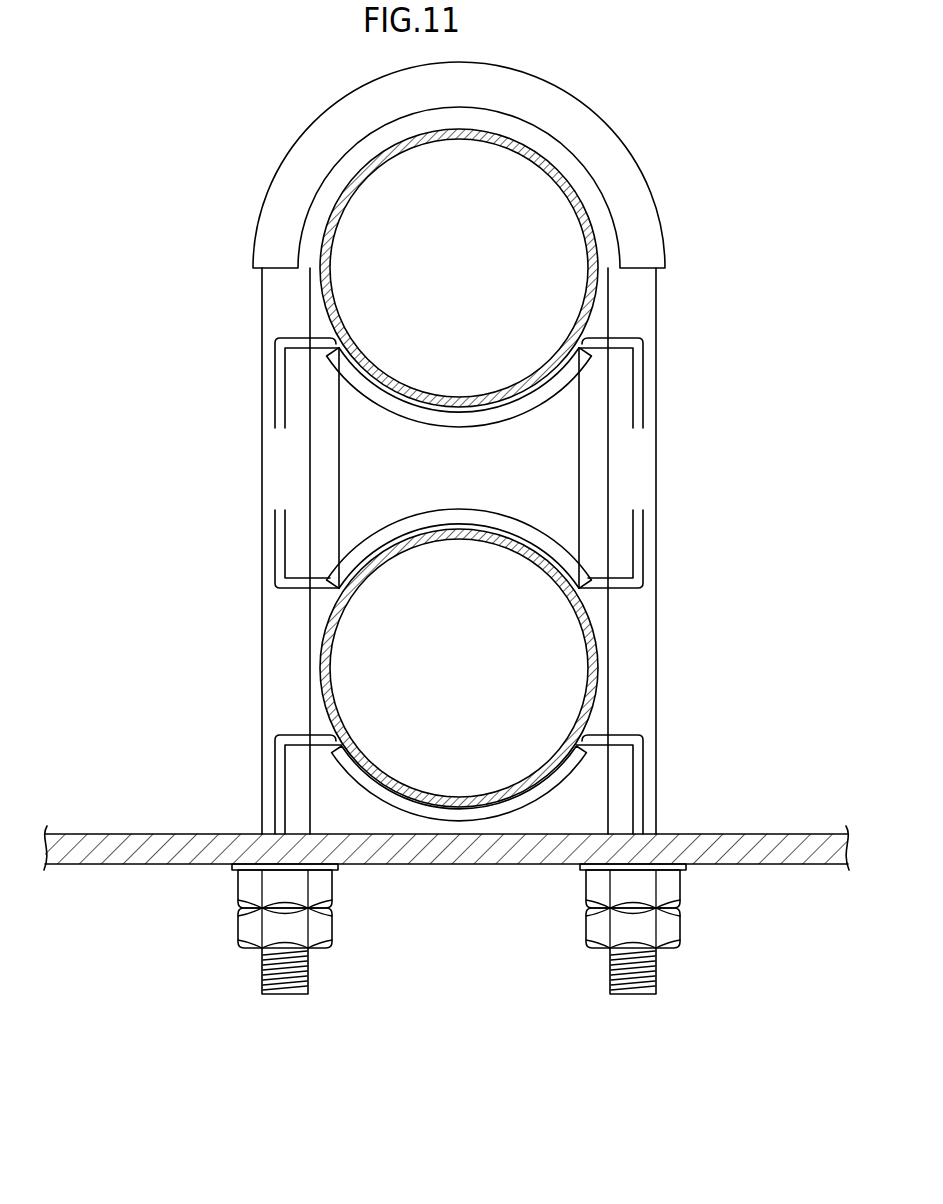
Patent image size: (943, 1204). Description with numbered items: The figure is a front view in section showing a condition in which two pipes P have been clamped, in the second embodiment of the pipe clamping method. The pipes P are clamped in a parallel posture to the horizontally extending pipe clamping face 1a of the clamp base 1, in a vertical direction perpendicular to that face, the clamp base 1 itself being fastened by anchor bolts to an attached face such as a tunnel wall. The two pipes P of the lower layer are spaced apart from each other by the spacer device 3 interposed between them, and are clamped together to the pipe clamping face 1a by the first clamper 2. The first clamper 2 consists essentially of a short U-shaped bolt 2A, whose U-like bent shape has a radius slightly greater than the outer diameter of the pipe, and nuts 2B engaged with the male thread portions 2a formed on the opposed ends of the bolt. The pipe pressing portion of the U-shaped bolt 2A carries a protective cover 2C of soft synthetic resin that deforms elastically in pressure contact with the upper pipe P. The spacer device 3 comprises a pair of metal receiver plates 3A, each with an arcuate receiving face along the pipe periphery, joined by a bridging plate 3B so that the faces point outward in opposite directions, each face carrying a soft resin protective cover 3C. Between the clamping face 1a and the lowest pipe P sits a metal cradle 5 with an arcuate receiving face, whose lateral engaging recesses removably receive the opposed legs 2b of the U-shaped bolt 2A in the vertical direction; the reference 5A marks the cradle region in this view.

The clamp base 1 is at (806, 866).
The pipe clamping face 1a is at (776, 834).
The first clamper 2 is at (262, 300).
The U-shaped bolt 2A is at (457, 654).
The male thread portions 2a is at (262, 986).
The legs 2b is at (262, 681).
The nuts 2B is at (238, 934).
The protective cover 2C is at (612, 150).
The spacer device 3 is at (748, 395).
The receiver plates 3A is at (643, 403).
The bridging plate 3B is at (579, 466).
The protective cover 3C is at (437, 426).
The cradle 5 is at (643, 751).
The saddle portion of lower bracket 5A is at (463, 822).
The pipe P is at (324, 271).